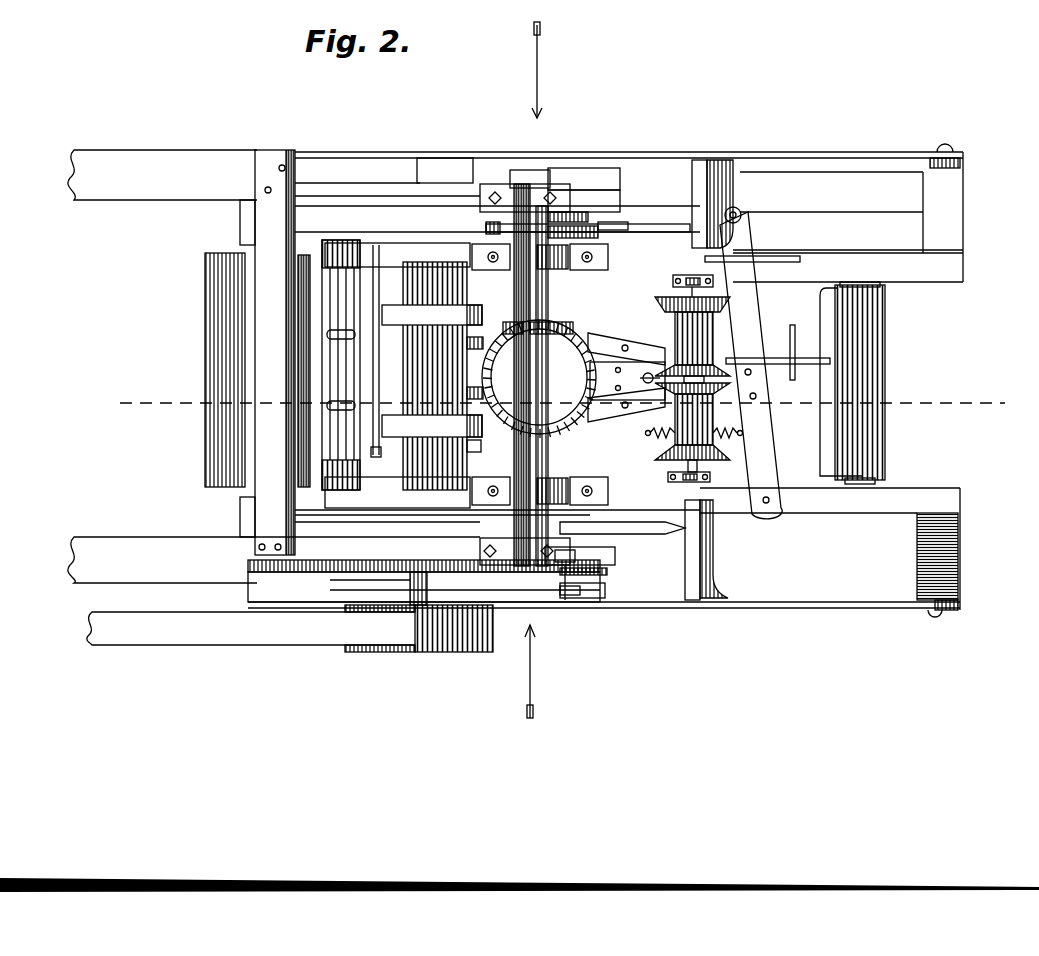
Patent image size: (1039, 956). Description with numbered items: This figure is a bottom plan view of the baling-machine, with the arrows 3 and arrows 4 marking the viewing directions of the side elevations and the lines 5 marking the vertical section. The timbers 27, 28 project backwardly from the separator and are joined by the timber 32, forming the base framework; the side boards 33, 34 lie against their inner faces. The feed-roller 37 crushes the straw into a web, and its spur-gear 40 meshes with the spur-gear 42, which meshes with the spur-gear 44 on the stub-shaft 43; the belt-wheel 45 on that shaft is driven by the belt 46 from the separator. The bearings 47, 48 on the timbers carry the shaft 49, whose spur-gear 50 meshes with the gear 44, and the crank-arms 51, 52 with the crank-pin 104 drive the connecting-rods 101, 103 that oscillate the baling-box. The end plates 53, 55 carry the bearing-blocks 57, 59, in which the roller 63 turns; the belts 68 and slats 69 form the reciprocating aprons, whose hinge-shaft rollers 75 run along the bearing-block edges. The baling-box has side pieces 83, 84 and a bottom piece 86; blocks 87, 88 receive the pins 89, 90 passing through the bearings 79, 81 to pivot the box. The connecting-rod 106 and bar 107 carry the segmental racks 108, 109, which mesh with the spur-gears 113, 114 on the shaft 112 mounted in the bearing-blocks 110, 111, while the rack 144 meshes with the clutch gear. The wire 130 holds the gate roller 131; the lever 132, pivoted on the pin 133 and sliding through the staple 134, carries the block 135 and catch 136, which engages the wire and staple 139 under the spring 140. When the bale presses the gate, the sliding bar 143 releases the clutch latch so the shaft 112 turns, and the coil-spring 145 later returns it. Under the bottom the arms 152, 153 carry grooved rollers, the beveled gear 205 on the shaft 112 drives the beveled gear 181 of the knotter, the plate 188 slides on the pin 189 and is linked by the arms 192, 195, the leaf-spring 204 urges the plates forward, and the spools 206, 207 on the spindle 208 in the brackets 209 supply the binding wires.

The arrows 3 is at (543, 70).
The arrows 4 is at (536, 671).
The lines 5 5 is at (561, 411).
The timber 27 is at (162, 175).
The timber 28 is at (274, 560).
The timber 32 is at (267, 352).
The side board 33 is at (497, 214).
The side board 34 is at (497, 526).
The feed-roller 37 is at (205, 450).
The spur-gear 40 is at (272, 574).
The spur-gear 42 is at (318, 574).
The stub-shaft 43 is at (345, 592).
The spur-gear 44 is at (430, 576).
The belt-wheel 45 is at (470, 655).
The belt 46 is at (251, 628).
The bearing 47 is at (484, 552).
The bearing 48 is at (490, 192).
The shaft 49 is at (514, 292).
The spur-gear 50 is at (607, 571).
The crank-arm 51 is at (562, 598).
The crank-arm 52 is at (574, 190).
The end plate 53 is at (380, 518).
The end plate 55 is at (348, 242).
The bearing-block 57 is at (397, 492).
The bearing-block 59 is at (397, 255).
The roller 63 is at (435, 376).
The belts 68 is at (426, 318).
The slats 69 is at (360, 430).
The rollers 75 is at (336, 242).
The bearing 79 is at (962, 165).
The bearing 81 is at (960, 607).
The side piece 83 is at (935, 488).
The side piece 84 is at (950, 262).
The bottom piece 86 is at (870, 388).
The block 87 is at (960, 553).
The block 88 is at (960, 215).
The pin 89 is at (937, 616).
The pin 90 is at (950, 156).
The connecting-rod 101 is at (605, 590).
The connecting-rod 103 is at (566, 168).
The crank-pin 104 is at (831, 223).
The connecting-rod 106 is at (826, 165).
The bar 107 is at (692, 178).
The segmental rack 108 is at (640, 532).
The segmental rack 109 is at (490, 228).
The bearing-block 110 is at (587, 469).
The bearing-block 111 is at (580, 270).
The shaft 112 is at (548, 452).
The spur-gear 113 is at (580, 546).
The spur-gear 114 is at (606, 242).
The wire 130 is at (795, 459).
The roller 131 is at (886, 448).
The lever 132 is at (765, 438).
The pin 133 is at (772, 501).
The staple 134 is at (762, 256).
The block 135 is at (758, 382).
The catch 136 is at (786, 358).
The staple 139 is at (791, 346).
The spring 140 is at (742, 330).
The sliding bar 143 is at (726, 208).
The segmental rack 144 is at (584, 201).
The retractile coil-spring 145 is at (662, 442).
The arm 152 is at (476, 448).
The arm 153 is at (514, 322).
The beveled gear 181 is at (539, 379).
The plate 188 is at (627, 381).
The pin 189 is at (648, 370).
The arm 192 is at (606, 418).
The arm 195 is at (612, 338).
The leaf-spring 204 is at (674, 325).
The beveled gear 205 is at (560, 324).
The spool 206 is at (722, 458).
The spool 207 is at (668, 298).
The spindle 208 is at (690, 480).
The brackets 209 is at (700, 267).